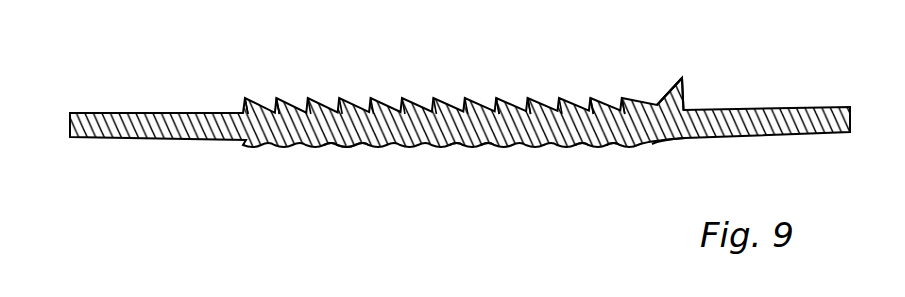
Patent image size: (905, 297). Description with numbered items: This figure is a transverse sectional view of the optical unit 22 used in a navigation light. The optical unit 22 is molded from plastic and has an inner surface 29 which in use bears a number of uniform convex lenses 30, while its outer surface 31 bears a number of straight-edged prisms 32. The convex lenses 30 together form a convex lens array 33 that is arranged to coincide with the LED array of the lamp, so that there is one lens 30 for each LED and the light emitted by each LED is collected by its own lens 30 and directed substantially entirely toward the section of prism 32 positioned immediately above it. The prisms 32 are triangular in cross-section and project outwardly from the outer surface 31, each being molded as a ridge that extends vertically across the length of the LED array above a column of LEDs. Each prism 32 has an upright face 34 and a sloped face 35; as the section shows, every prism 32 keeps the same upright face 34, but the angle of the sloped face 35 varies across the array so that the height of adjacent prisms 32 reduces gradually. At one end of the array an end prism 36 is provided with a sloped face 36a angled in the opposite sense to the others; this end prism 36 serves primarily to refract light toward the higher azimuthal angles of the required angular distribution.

The optical unit 22 is at (383, 74).
The inner surface 29 is at (698, 138).
The convex lens 30 is at (455, 148).
The outer surface 31 is at (705, 108).
The prism 32 is at (530, 100).
The convex lens array 33 is at (343, 162).
The upright face 34 is at (270, 101).
The sloped face 35 is at (292, 101).
The end prism 36 is at (672, 100).
The sloped face of end prism 36a is at (670, 96).